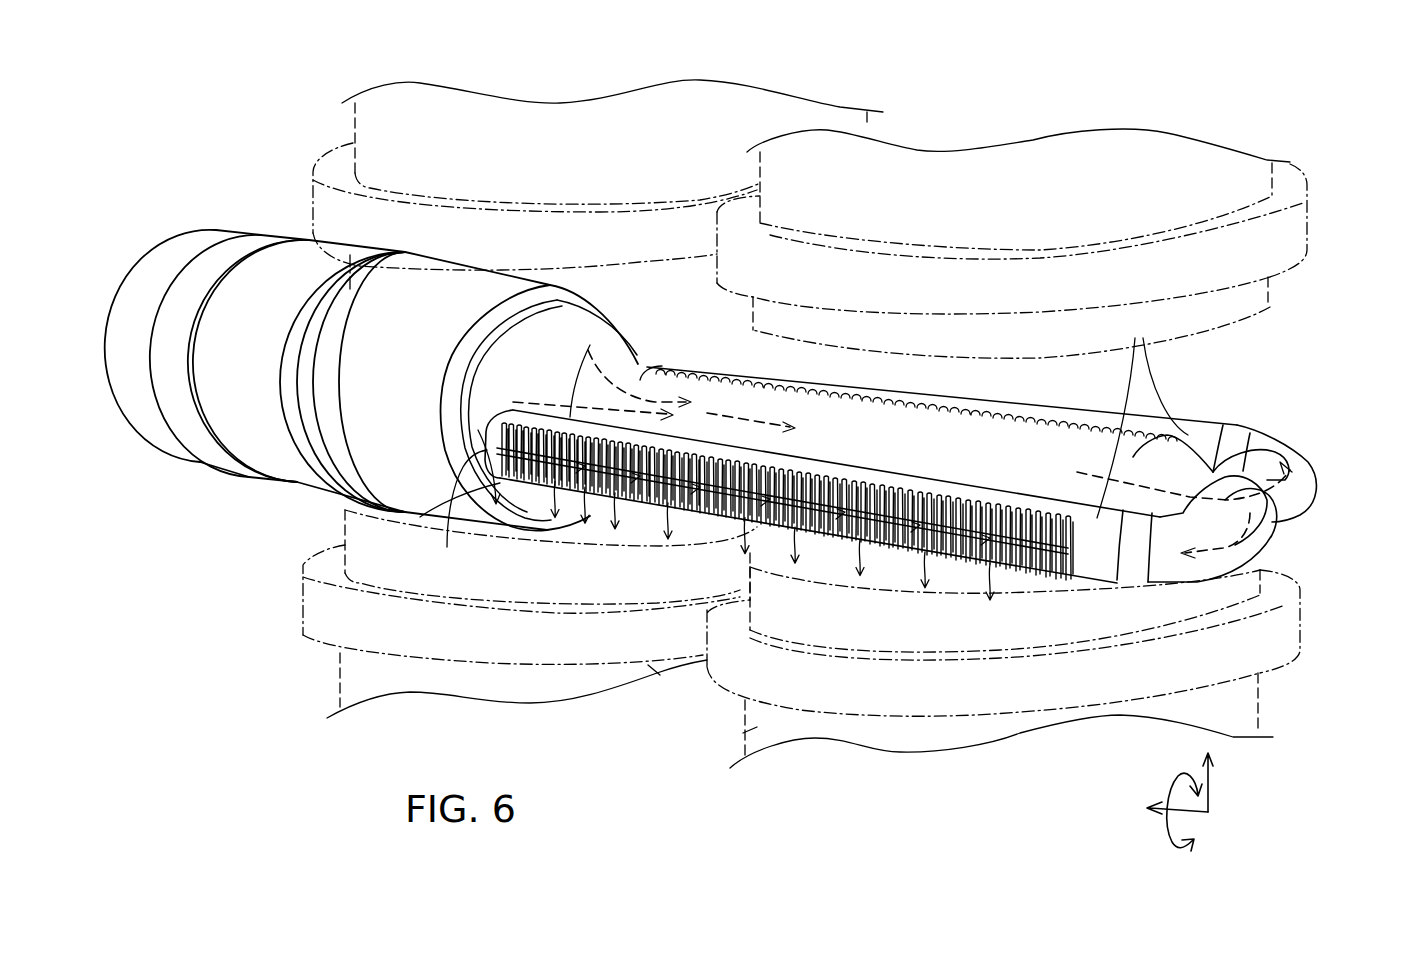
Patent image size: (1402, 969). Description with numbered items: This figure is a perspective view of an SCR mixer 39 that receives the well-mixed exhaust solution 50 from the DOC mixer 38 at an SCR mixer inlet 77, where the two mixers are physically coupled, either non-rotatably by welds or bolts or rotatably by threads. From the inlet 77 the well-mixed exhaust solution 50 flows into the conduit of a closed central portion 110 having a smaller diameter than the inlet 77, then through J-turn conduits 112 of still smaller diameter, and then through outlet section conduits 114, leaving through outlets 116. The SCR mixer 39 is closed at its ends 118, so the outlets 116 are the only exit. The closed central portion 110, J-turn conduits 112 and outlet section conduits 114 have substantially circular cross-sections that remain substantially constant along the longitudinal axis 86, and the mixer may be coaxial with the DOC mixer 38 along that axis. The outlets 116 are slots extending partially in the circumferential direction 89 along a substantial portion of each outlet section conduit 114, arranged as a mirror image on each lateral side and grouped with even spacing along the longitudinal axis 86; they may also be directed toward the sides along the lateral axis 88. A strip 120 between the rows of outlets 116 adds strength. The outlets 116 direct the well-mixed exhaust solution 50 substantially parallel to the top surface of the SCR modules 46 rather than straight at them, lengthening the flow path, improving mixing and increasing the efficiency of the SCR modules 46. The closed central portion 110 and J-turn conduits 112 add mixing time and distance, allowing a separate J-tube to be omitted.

The DOC mixer 38 is at (291, 267).
The SCR mixer 39 is at (1177, 453).
The SCR modules 46 is at (828, 155).
The well-mixed exhaust solution 50 is at (738, 410).
The SCR mixer inlet 77 is at (484, 300).
The longitudinal axis 86 is at (1187, 815).
The lateral axis 88 is at (1210, 788).
The circumferential direction 89 is at (1178, 780).
The closed central portion 110 is at (872, 418).
The J-turn conduits 112 is at (1267, 530).
The outlet section conduits 114 is at (1142, 417).
The outlets 116 is at (590, 498).
The ends 118 is at (447, 547).
The strip 120 is at (818, 532).